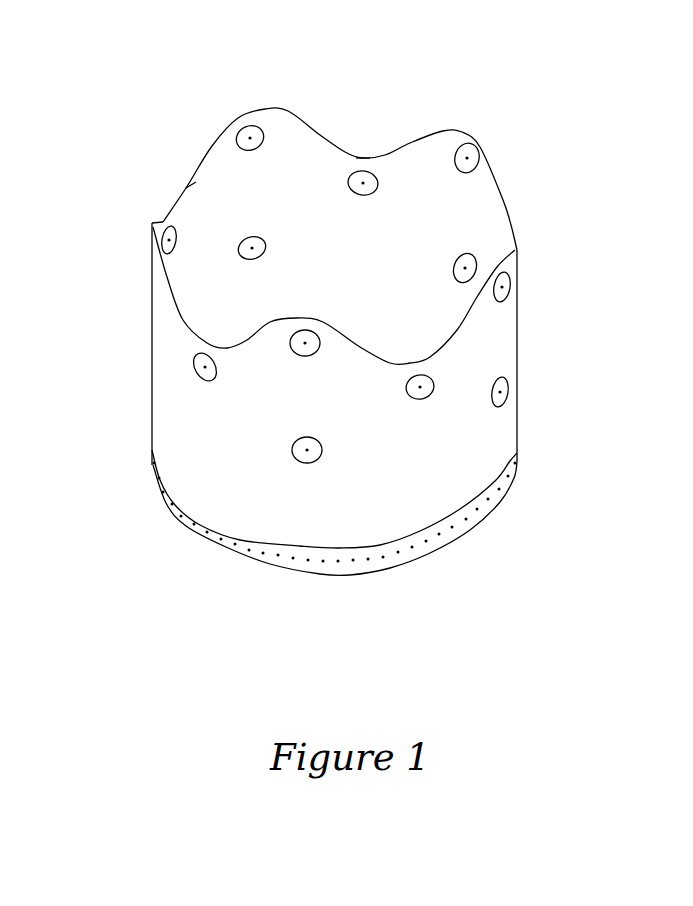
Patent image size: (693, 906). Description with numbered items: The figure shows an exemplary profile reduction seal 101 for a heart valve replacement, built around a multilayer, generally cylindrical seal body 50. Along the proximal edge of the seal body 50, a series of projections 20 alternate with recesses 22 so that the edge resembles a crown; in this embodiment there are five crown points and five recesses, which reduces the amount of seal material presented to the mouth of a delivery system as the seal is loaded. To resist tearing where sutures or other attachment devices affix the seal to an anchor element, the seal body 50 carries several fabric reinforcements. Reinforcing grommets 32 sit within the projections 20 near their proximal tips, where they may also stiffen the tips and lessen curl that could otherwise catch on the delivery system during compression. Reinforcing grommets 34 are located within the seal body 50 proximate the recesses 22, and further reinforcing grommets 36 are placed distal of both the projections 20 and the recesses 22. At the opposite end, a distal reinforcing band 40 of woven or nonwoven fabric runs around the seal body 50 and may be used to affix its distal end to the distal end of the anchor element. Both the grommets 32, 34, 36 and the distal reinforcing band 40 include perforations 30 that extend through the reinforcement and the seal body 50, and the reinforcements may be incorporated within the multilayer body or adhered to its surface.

The wound dressing / tubular device 101 is at (548, 92).
The projections 20 is at (288, 110).
The recesses 22 is at (192, 184).
The perforations 30 is at (305, 452).
The reinforcing grommets 32 is at (250, 124).
The reinforcing grommets 34 is at (170, 224).
The reinforcing grommets 36 is at (260, 252).
The distal reinforcing band 40 is at (445, 542).
The seal body 50 is at (503, 348).